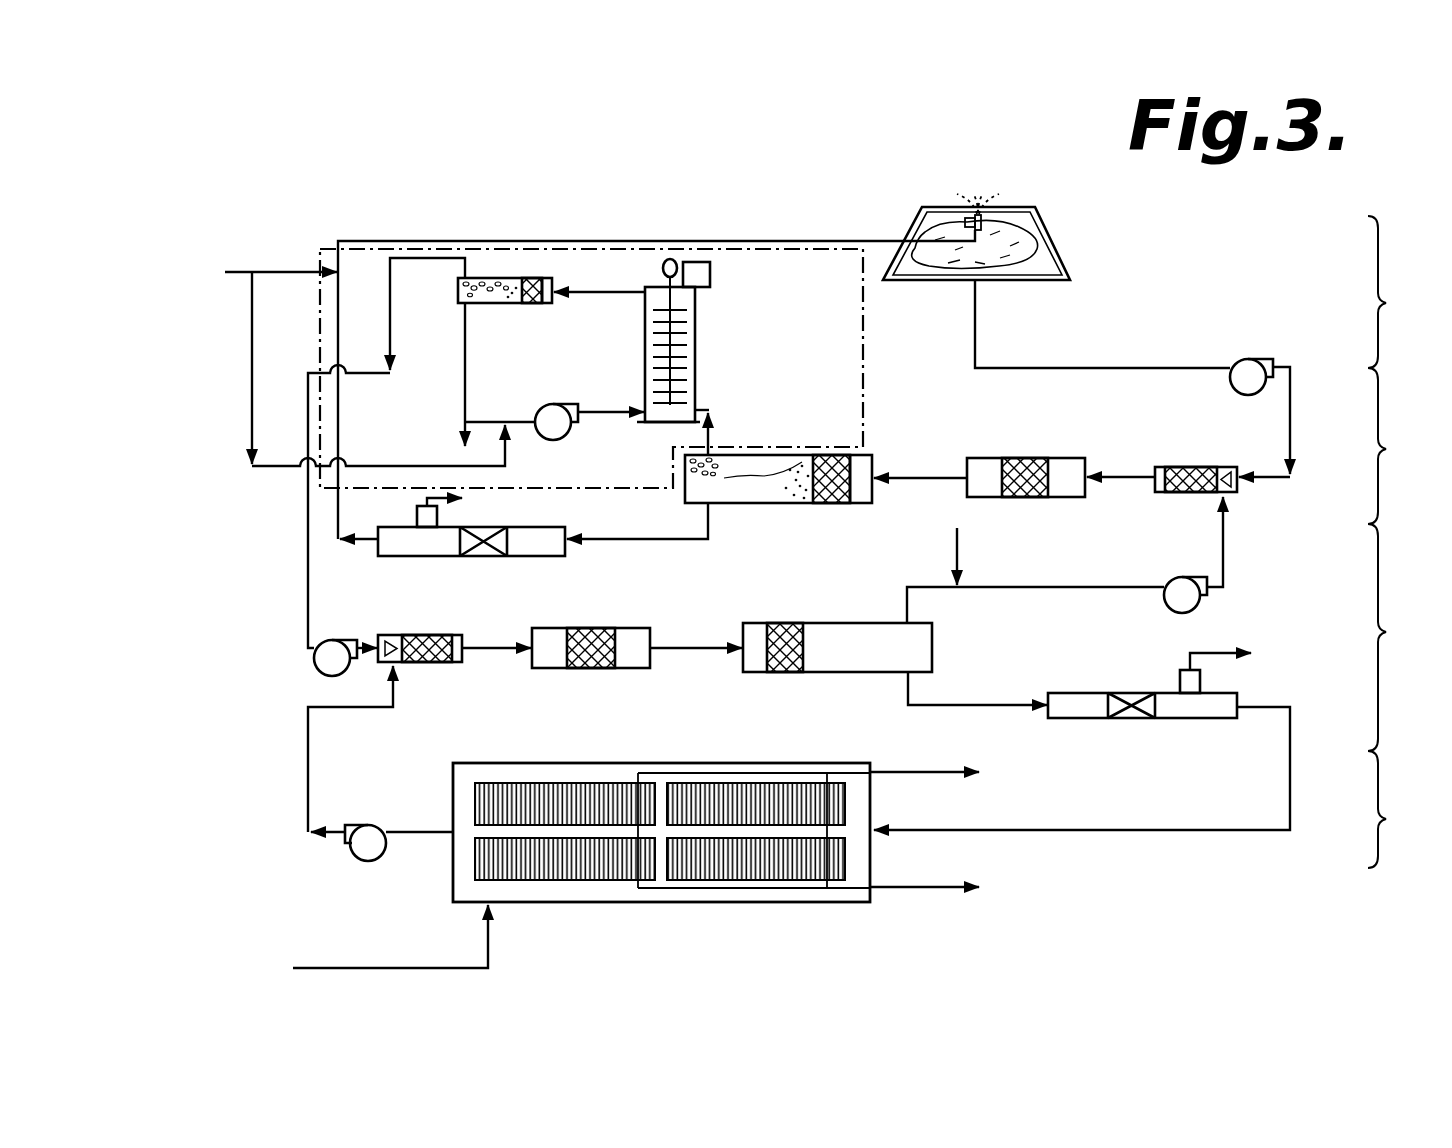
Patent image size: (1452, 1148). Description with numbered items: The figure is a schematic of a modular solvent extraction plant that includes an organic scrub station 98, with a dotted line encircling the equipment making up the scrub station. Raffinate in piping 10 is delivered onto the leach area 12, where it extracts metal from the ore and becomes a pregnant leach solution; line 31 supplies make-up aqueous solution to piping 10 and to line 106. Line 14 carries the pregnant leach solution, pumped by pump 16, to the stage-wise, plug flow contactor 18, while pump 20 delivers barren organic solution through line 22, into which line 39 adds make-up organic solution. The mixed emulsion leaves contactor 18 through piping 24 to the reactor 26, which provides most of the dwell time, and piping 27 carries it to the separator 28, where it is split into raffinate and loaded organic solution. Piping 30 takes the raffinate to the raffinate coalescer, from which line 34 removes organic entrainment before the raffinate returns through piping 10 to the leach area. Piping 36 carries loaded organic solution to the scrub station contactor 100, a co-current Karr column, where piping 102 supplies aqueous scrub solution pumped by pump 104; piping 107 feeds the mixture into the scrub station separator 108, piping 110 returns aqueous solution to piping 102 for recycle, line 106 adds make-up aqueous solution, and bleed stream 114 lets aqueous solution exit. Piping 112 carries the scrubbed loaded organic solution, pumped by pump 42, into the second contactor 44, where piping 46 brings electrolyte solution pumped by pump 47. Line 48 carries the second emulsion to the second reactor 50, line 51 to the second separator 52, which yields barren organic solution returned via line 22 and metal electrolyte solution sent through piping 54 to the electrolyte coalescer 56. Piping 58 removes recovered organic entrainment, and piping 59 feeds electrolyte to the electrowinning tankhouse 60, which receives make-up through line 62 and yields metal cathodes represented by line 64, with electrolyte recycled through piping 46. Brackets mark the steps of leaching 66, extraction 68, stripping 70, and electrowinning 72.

The piping 10 is at (583, 241).
The leach area 12 is at (1055, 242).
The line 14 is at (1125, 366).
The pump 16 is at (1253, 362).
The stage-wise, plug flow contactor 18 is at (1190, 466).
The pump 20 is at (1172, 601).
The line 22 is at (1225, 553).
The piping 24 is at (1134, 483).
The reactor 26 is at (1022, 457).
The piping 27 is at (934, 478).
The separator 28 is at (765, 502).
The piping 30 is at (649, 541).
The line 31 is at (272, 270).
The line 34 is at (456, 507).
The piping 36 is at (713, 433).
The line 39 is at (955, 552).
The pump 42 is at (320, 672).
The second stage-wise, plug flow contactor 44 is at (428, 635).
The piping 46 is at (376, 716).
The pump 47 is at (374, 848).
The line 48 is at (498, 652).
The second reactor 50 is at (580, 627).
The line 51 is at (706, 650).
The second separator 52 is at (830, 622).
The piping 54 is at (1002, 703).
The electrolyte coalescer 56 is at (1096, 722).
The piping 58 is at (1229, 652).
The piping 59 is at (1216, 835).
The electrowinning tankhouse 60 is at (666, 904).
The line 62 is at (396, 966).
The line 64 is at (921, 771).
The leaching 66 is at (1397, 292).
The extraction 68 is at (1397, 446).
The stripping 70 is at (1397, 637).
The electrowinning 72 is at (1397, 809).
The organic scrub station 98 is at (871, 410).
The stage-wise, plug flow contactor 100 is at (699, 379).
The piping 102 is at (600, 410).
The pump 104 is at (566, 434).
The line 106 is at (250, 372).
The piping 107 is at (594, 291).
The scrub station separator 108 is at (508, 279).
The piping 110 is at (466, 375).
The piping 112 is at (392, 337).
The bleed stream 114 is at (460, 447).